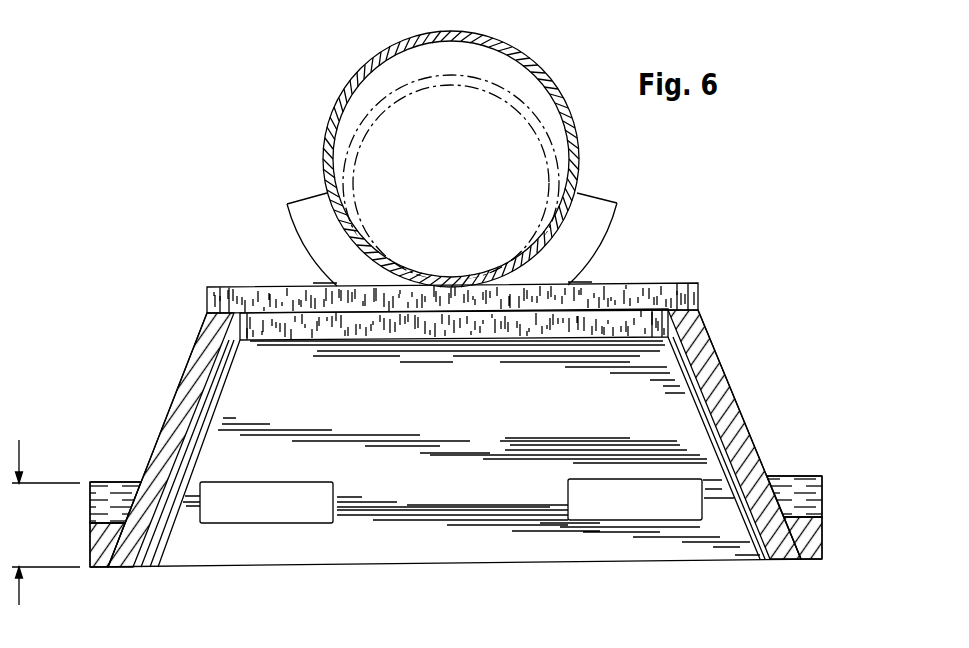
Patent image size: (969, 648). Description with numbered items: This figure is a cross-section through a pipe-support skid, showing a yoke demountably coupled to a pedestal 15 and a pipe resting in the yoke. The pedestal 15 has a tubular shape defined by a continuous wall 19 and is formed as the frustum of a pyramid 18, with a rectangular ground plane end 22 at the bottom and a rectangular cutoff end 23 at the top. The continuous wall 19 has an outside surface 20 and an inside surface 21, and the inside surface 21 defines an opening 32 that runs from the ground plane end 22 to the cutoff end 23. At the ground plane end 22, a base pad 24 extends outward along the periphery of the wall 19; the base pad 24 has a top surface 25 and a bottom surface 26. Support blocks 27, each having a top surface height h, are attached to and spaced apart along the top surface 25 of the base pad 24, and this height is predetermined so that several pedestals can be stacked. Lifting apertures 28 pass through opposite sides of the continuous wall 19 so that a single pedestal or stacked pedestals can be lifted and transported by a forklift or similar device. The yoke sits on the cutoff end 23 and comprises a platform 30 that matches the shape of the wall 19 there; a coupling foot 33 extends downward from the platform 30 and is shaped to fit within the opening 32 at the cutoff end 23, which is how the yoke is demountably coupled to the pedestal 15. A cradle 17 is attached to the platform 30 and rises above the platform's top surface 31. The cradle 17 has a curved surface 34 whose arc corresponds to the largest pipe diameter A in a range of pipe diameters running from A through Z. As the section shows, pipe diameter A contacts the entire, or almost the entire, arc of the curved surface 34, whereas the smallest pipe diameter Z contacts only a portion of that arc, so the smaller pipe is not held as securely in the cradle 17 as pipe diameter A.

The largest pipe diameter A is at (372, 60).
The smallest pipe diameter Z is at (358, 127).
The curved surface 34 is at (545, 233).
The ground plane end 22 is at (557, 13).
The cradle 17 is at (618, 218).
The platform 30 is at (217, 287).
The top surface 31 is at (263, 288).
The coupling foot 33 is at (432, 328).
The cutoff end 23 is at (603, 347).
The pyramid 18 is at (195, 343).
The continuous wall 19 is at (195, 385).
The outside surface 20 is at (160, 428).
The inside surface 21 is at (190, 440).
The support blocks 27 is at (97, 483).
The top surface 25 is at (103, 523).
The base pad 24 is at (106, 560).
The bottom surface 26 is at (116, 568).
The lifting apertures 28 is at (272, 492).
The opening 32 is at (423, 542).
The pedestal 15 is at (833, 319).
The top surface height h is at (46, 522).